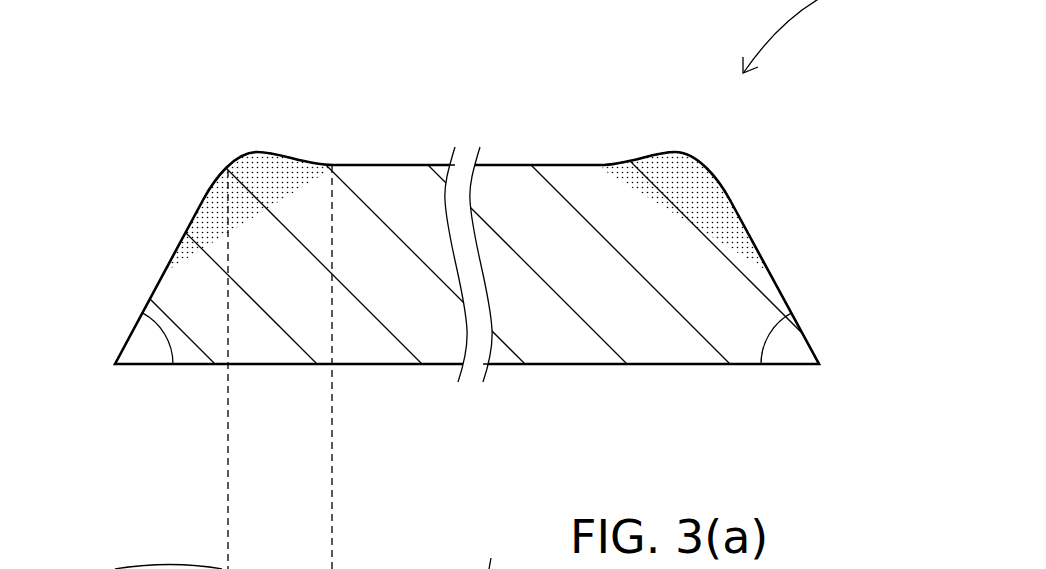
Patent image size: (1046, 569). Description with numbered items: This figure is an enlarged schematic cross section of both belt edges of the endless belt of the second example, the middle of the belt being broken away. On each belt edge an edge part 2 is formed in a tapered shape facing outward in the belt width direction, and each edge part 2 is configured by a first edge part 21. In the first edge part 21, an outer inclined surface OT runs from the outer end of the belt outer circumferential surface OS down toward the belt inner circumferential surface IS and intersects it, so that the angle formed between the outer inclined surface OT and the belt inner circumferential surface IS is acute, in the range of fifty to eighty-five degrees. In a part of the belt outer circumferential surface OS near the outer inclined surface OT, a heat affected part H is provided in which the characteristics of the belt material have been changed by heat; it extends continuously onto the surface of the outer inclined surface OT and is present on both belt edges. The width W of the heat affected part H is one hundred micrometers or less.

The first edge part 21 is at (172, 256).
The edge part 2 is at (452, 261).
The belt outer circumferential surface OS is at (383, 165).
The outer inclined surface OT is at (204, 199).
The heat affected part H is at (270, 172).
The belt inner circumferential surface IS is at (398, 354).
The width of the heat affected part W is at (332, 470).